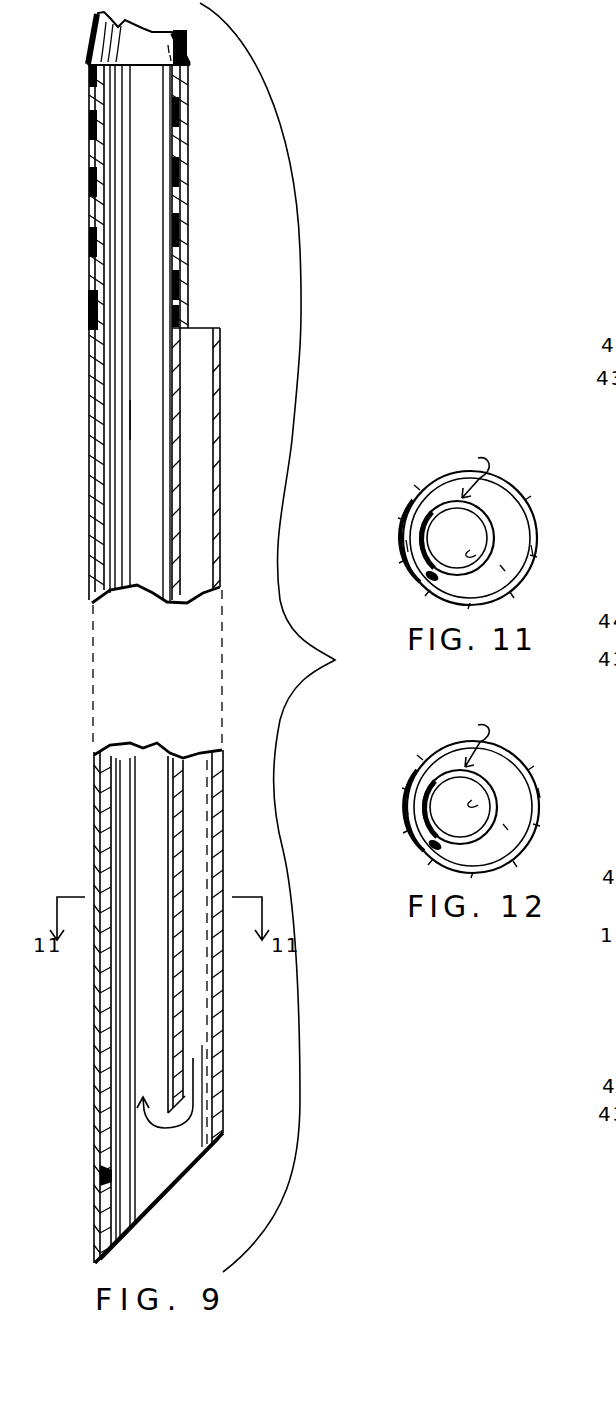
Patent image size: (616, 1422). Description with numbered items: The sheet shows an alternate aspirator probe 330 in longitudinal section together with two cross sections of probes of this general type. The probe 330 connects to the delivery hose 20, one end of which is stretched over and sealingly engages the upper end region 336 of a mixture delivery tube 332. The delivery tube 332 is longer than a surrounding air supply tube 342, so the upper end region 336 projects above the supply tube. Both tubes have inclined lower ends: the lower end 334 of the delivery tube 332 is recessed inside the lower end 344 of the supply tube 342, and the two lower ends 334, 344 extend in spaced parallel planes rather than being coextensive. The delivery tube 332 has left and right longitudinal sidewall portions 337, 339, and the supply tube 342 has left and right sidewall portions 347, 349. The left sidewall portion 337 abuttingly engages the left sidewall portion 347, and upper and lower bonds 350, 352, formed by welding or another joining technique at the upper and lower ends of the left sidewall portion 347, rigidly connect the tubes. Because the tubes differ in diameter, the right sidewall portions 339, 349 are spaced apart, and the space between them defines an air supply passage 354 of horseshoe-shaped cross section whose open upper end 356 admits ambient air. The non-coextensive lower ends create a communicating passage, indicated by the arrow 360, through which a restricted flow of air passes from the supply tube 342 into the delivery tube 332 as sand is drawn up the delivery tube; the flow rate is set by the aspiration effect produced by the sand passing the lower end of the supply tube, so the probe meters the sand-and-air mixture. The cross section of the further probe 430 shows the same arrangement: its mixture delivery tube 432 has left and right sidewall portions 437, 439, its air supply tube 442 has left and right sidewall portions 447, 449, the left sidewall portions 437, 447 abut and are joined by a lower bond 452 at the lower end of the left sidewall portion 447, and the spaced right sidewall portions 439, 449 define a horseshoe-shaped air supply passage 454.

In FIG. 9, the delivery hose 20 is at (88, 96).
In FIG. 9, the aspirator probe 330 is at (84, 620).
In FIG. 11, the aspirator probe 330 is at (511, 468).
In FIG. 9, the mixture delivery tube 332 is at (134, 420).
In FIG. 11, the mixture delivery tube 332 is at (464, 470).
In FIG. 9, the lower end of delivery tube 334 is at (147, 1140).
In FIG. 9, the upper end region 336 is at (166, 148).
In FIG. 9, the left sidewall portion of delivery tube 337 is at (128, 592).
In FIG. 11, the left sidewall portion of delivery tube 337 is at (418, 524).
In FIG. 9, the right sidewall portion of delivery tube 339 is at (150, 597).
In FIG. 11, the right sidewall portion of delivery tube 339 is at (470, 550).
In FIG. 9, the air supply tube 342 is at (232, 391).
In FIG. 11, the air supply tube 342 is at (430, 483).
In FIG. 9, the lower end of air supply tube 344 is at (195, 1172).
In FIG. 9, the left sidewall portion of air supply tube 347 is at (96, 524).
In FIG. 11, the left sidewall portion of air supply tube 347 is at (406, 548).
In FIG. 9, the right sidewall portion of air supply tube 349 is at (222, 582).
In FIG. 11, the right sidewall portion of air supply tube 349 is at (533, 552).
In FIG. 9, the upper bond 350 is at (95, 330).
In FIG. 9, the lower bond 352 is at (107, 1176).
In FIG. 11, the lower bond 352 is at (440, 586).
In FIG. 9, the air supply passage 354 is at (198, 437).
In FIG. 11, the air supply passage 354 is at (505, 571).
In FIG. 9, the open upper end of air supply passage 356 is at (193, 340).
In FIG. 9, the communicating passage 360 is at (193, 1097).
In FIG. 12, the aspirator probe 430 is at (509, 735).
In FIG. 12, the mixture delivery tube 432 is at (463, 739).
In FIG. 12, the left sidewall portion of delivery tube 437 is at (418, 790).
In FIG. 12, the right sidewall portion of delivery tube 439 is at (472, 800).
In FIG. 12, the air supply tube 442 is at (430, 753).
In FIG. 12, the left sidewall portion of air supply tube 447 is at (404, 806).
In FIG. 12, the right sidewall portion of air supply tube 449 is at (540, 790).
In FIG. 12, the lower bond 452 is at (442, 852).
In FIG. 12, the air supply passage 454 is at (508, 830).